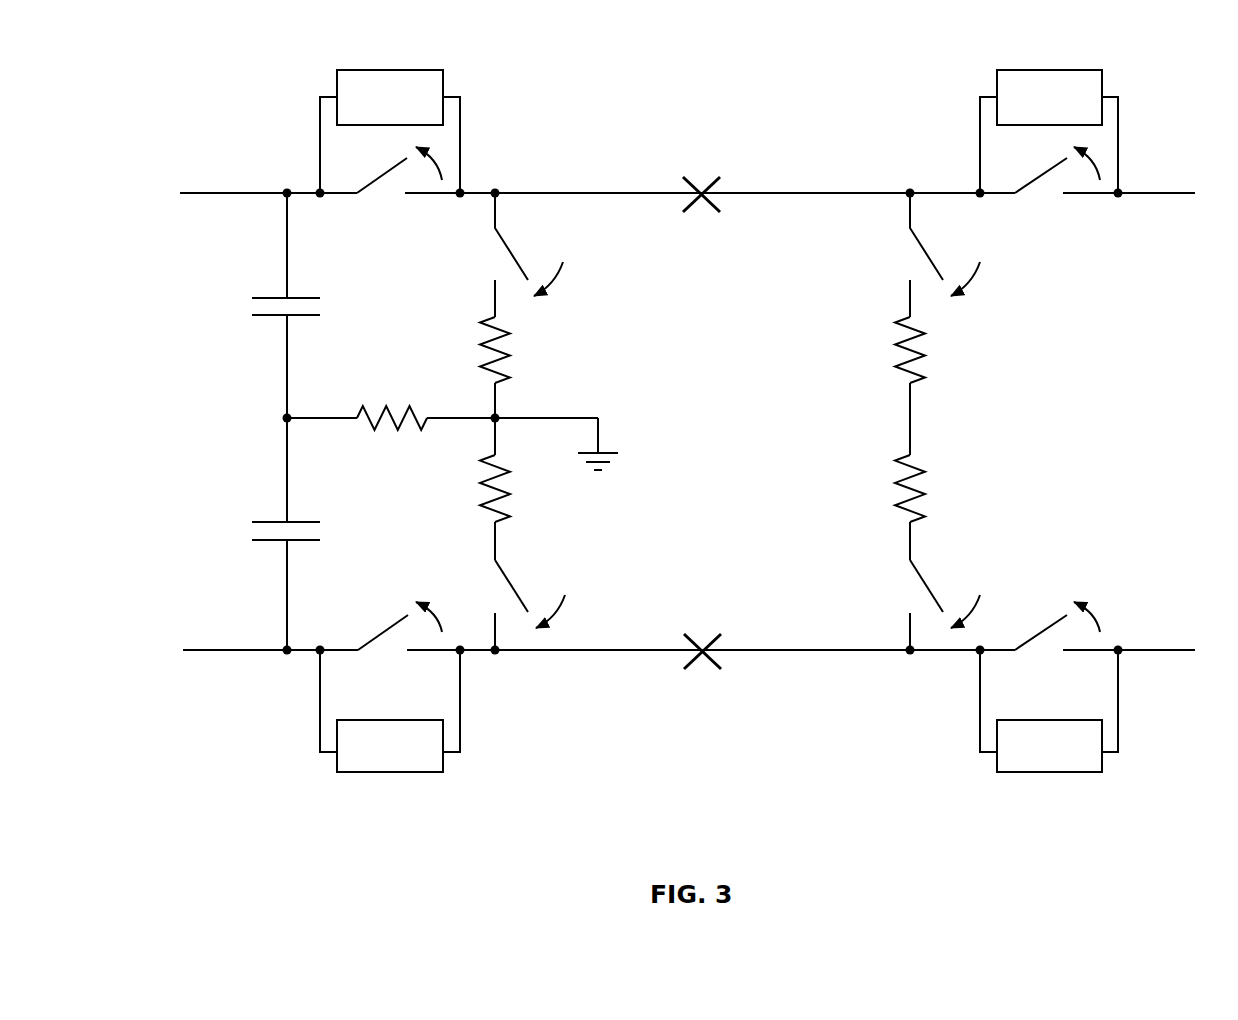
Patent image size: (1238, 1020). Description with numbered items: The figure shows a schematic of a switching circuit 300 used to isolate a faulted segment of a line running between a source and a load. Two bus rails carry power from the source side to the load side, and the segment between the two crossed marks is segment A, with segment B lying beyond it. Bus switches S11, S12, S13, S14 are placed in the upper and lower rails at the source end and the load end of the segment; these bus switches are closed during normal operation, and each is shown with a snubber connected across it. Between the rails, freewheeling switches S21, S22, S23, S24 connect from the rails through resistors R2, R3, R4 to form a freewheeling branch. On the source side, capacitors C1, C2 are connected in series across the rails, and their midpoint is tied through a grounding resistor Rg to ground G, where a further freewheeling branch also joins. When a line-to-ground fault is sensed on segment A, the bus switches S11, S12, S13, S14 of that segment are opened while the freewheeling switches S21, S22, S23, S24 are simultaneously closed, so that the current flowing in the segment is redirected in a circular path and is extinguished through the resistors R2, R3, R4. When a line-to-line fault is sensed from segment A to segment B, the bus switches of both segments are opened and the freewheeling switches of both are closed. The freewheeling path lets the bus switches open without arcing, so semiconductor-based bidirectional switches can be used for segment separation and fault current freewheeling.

The switching circuit 300 is at (113, 43).
The bus switch S11 is at (399, 196).
The bus switch S12 is at (400, 652).
The bus switch S13 is at (1057, 196).
The bus switch S14 is at (1057, 652).
The freewheeling switch S21 is at (502, 244).
The freewheeling switch S22 is at (503, 605).
The freewheeling switch S23 is at (920, 244).
The freewheeling switch S24 is at (920, 605).
The capacitor C1 is at (266, 305).
The capacitor C2 is at (266, 530).
The grounding resistor Rg is at (442, 401).
The resistor R2 is at (512, 349).
The resistor R3 is at (512, 489).
The resistor R4 is at (928, 507).
The ground G is at (601, 429).
The segment A is at (701, 179).
The segment B is at (702, 641).